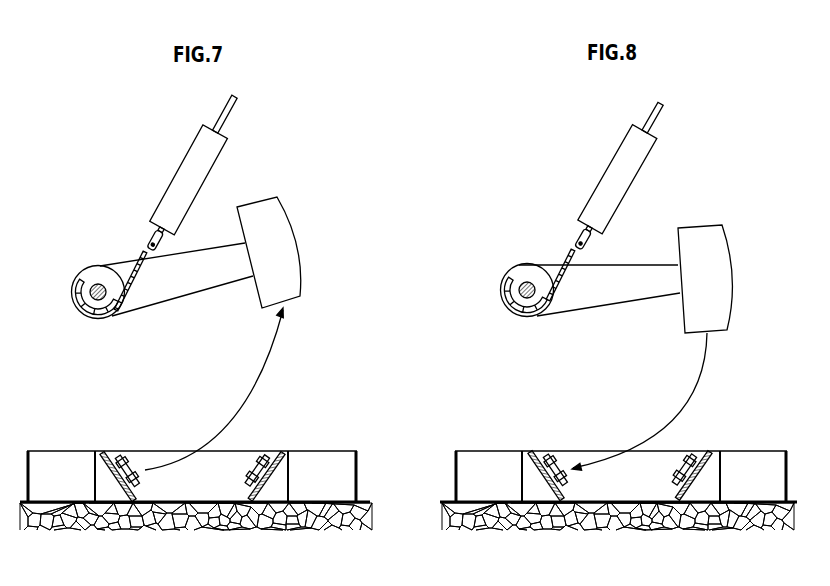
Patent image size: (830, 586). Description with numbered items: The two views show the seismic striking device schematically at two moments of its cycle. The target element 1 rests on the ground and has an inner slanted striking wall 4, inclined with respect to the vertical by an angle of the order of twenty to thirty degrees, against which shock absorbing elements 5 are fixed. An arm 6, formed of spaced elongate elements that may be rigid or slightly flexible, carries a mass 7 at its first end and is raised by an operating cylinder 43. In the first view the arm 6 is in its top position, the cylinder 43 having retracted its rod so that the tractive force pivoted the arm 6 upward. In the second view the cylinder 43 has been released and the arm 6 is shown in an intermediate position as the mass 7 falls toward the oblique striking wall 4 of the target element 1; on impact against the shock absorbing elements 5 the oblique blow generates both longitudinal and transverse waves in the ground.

In FIG. 7, the target element 1 is at (58, 425).
In FIG. 8, the target element 1 is at (486, 427).
In FIG. 7, the inner slanted striking wall 4 is at (105, 458).
In FIG. 8, the inner slanted striking wall 4 is at (535, 452).
In FIG. 7, the shock absorbing elements 5 is at (117, 458).
In FIG. 8, the shock absorbing elements 5 is at (555, 457).
In FIG. 7, the arm 6 is at (167, 285).
In FIG. 8, the arm 6 is at (618, 298).
In FIG. 7, the mass 7 is at (300, 278).
In FIG. 8, the mass 7 is at (697, 247).
In FIG. 7, the cylinder 43 is at (146, 173).
In FIG. 8, the cylinder 43 is at (574, 177).